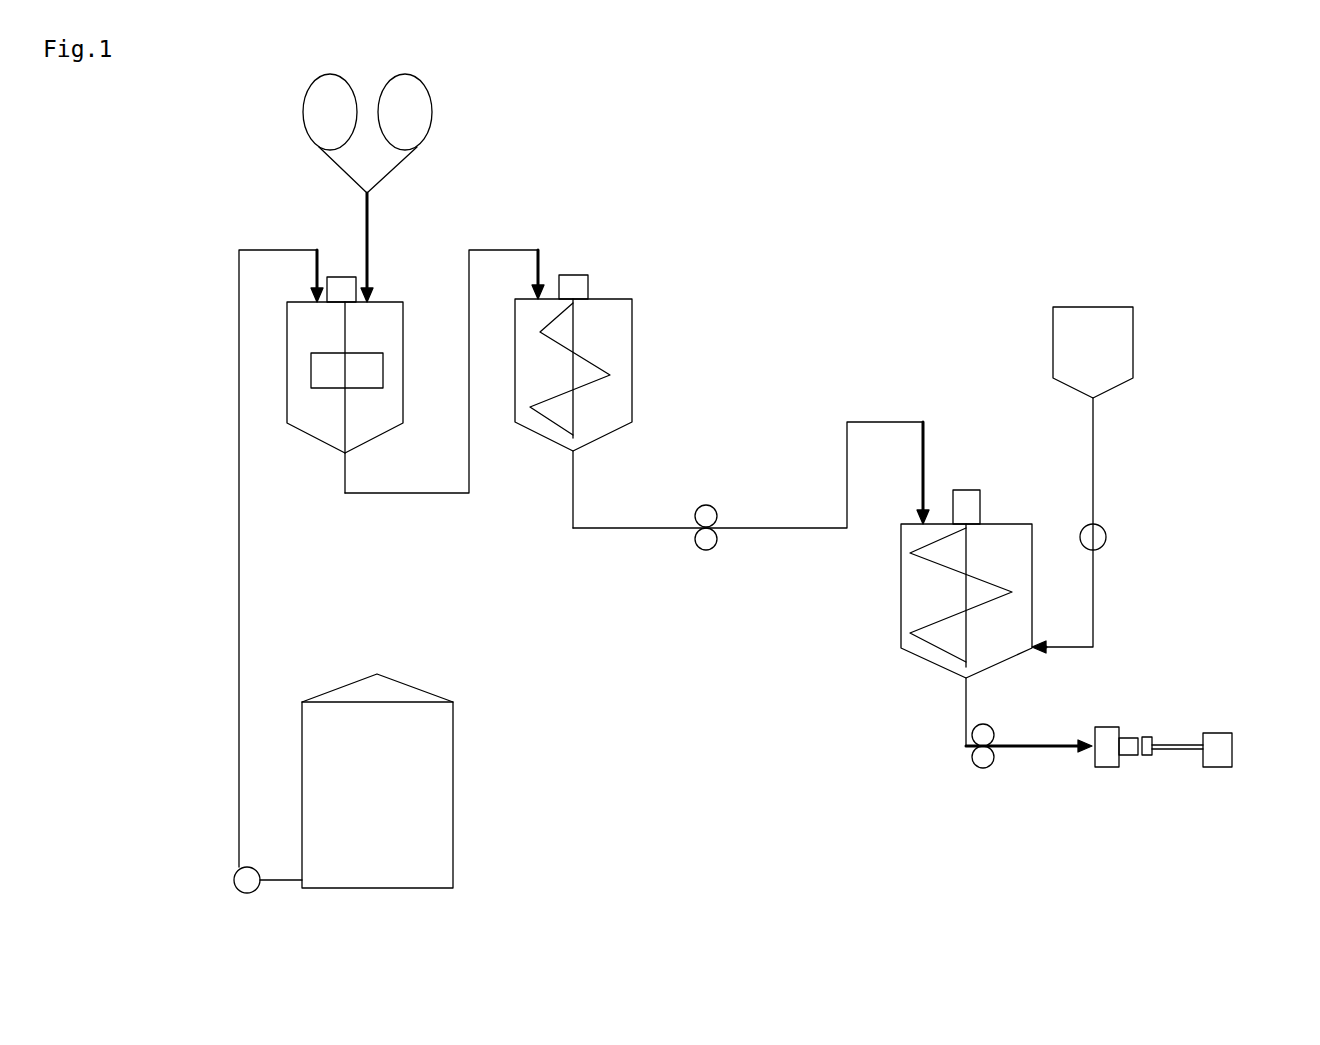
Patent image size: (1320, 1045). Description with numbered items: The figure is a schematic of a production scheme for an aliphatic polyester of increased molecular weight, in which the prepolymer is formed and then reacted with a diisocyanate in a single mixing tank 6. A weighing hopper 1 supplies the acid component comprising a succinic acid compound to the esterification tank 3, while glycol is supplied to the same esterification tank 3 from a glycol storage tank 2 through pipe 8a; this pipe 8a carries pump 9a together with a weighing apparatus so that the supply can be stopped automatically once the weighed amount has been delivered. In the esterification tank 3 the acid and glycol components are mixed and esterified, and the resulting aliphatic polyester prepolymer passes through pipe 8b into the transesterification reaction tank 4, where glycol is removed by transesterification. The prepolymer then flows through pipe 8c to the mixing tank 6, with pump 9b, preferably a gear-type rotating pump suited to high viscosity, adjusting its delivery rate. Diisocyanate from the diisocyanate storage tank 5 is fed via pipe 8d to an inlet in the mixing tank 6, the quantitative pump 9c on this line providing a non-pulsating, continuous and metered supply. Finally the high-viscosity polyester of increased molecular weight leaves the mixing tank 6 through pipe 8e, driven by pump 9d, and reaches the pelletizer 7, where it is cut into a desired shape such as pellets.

The weighing hopper 1 is at (387, 188).
The glycol storage tank 2 is at (395, 781).
The esterification tank 3 is at (303, 452).
The transesterification reaction tank 4 is at (593, 401).
The diisocyanate storage tank 5 is at (1116, 352).
The mixing tank 6 is at (947, 618).
The pelletizer 7 is at (1193, 752).
The pipe 8a is at (233, 558).
The pipe 8b is at (444, 422).
The pipe 8c is at (751, 468).
The pipe 8d is at (1087, 525).
The pipe 8e is at (970, 717).
The pump 9a is at (209, 896).
The pump 9b is at (686, 587).
The quantitative pump 9c is at (1143, 552).
The pump 9d is at (1000, 800).